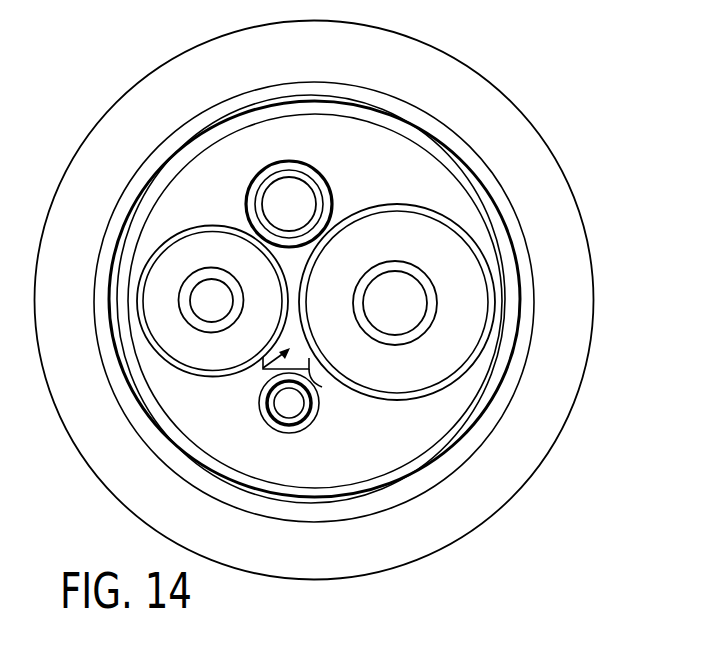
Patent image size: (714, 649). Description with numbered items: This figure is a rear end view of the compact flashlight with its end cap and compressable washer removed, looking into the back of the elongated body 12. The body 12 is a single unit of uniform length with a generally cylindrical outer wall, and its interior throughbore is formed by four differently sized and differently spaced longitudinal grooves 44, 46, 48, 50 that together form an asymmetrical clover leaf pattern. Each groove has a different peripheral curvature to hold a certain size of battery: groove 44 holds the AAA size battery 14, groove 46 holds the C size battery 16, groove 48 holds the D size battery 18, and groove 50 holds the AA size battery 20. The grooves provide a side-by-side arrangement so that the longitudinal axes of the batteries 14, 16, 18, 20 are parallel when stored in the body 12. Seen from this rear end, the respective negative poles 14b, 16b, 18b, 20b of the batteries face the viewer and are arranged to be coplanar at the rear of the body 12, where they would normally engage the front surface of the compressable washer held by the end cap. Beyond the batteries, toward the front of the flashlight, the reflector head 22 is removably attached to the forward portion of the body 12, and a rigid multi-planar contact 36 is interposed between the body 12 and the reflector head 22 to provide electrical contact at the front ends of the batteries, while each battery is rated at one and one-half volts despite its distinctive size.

The elongated body 12 is at (504, 264).
The battery 14 is at (309, 423).
The negative pole 14b is at (290, 400).
The battery 16 is at (199, 253).
The negative pole 16b is at (207, 302).
The battery 18 is at (412, 235).
The negative pole 18b is at (398, 303).
The battery 20 is at (332, 198).
The negative pole 20b is at (300, 193).
The reflector head 22 is at (514, 102).
The multi-planar contact 36 is at (263, 368).
The longitudinal groove 44 is at (321, 408).
The longitudinal groove 46 is at (137, 302).
The longitudinal groove 48 is at (470, 222).
The longitudinal groove 50 is at (257, 171).